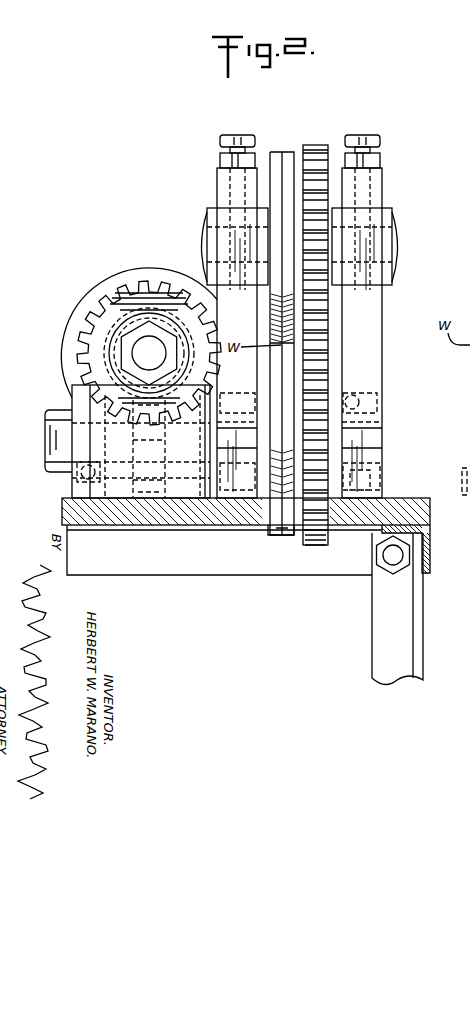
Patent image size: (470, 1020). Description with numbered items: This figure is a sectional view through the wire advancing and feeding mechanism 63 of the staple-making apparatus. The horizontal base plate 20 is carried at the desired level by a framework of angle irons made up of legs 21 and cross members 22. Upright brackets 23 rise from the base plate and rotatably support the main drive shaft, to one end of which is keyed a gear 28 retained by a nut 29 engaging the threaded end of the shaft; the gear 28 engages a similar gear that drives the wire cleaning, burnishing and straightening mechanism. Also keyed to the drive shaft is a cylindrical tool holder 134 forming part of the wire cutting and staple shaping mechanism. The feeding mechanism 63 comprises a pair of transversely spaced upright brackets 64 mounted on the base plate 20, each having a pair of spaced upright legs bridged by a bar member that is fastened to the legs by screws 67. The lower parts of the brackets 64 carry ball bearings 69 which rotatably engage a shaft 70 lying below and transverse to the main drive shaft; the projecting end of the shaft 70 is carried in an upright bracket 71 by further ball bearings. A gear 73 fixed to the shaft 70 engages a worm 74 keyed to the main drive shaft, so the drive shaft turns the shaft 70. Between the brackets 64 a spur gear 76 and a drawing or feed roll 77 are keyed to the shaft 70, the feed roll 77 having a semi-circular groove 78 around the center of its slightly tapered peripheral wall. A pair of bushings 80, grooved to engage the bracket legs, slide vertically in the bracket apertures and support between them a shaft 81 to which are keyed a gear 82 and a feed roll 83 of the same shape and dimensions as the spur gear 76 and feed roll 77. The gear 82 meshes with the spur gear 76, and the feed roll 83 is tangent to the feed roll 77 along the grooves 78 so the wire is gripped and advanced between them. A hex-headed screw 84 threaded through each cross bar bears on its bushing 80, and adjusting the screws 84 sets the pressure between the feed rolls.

The base plate 20 is at (207, 515).
The leg 21 is at (402, 627).
The cross member 22 is at (430, 532).
The upright bracket 23 is at (97, 436).
The gear 28 is at (134, 292).
The nut 29 is at (150, 322).
The cylindrical tool holder 134 is at (82, 295).
The worm 74 is at (106, 354).
The gear 73 is at (147, 498).
The upright bracket 71 is at (76, 482).
The upright bracket 64 is at (245, 326).
The wire advancing and feeding mechanism 63 is at (390, 181).
The ball bearing 69 is at (383, 393).
The shaft 70 is at (383, 422).
The bushing 80 is at (209, 218).
The shaft 81 is at (398, 252).
The screw 67 is at (221, 160).
The hex-headed screw 84 is at (243, 131).
The groove 78 is at (282, 151).
The feed roll 83 is at (290, 151).
The gear 82 is at (322, 145).
The spur gear 76 is at (312, 546).
The feed roll 77 is at (268, 534).